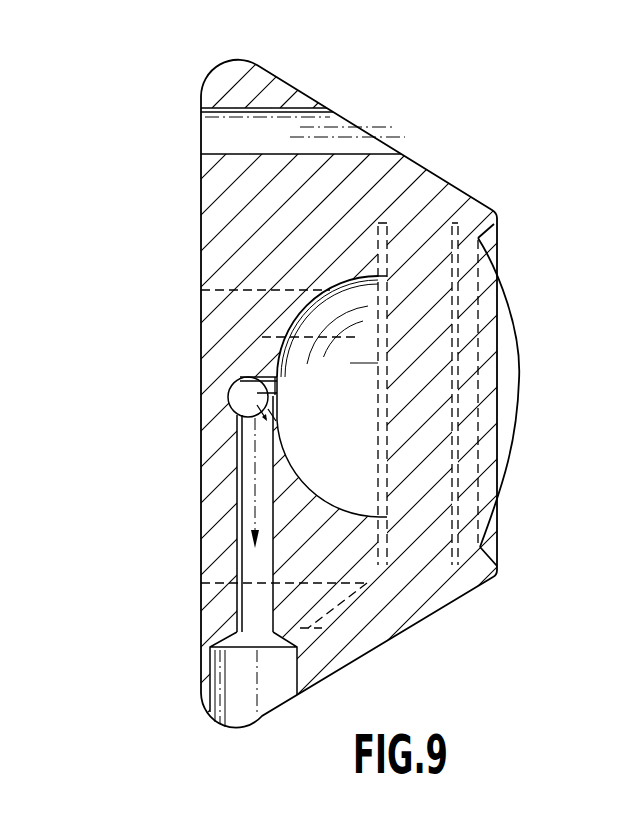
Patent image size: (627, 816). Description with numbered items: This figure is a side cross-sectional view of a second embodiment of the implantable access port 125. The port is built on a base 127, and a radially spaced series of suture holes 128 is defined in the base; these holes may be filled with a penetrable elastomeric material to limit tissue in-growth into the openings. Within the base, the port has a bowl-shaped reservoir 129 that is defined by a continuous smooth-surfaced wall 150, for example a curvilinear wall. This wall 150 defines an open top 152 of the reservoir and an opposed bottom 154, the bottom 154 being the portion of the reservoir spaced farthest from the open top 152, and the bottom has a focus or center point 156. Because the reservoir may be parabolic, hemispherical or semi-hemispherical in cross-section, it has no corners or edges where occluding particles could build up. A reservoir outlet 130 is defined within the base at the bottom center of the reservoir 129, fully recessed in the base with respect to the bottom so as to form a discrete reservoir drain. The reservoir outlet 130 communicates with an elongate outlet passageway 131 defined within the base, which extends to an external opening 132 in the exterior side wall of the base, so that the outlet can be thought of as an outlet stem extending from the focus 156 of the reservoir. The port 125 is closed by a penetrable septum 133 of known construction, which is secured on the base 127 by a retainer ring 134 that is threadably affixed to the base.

The implantable access port 125 is at (150, 99).
The base 127 is at (200, 204).
The suture holes 128 is at (290, 143).
The bowl-shaped reservoir 129 is at (358, 467).
The reservoir outlet 130 is at (232, 388).
The outlet passageway 131 is at (250, 462).
The external opening 132 is at (274, 687).
The penetrable septum 133 is at (518, 420).
The retainer ring 134 is at (497, 573).
The continuous smooth-surfaced wall 150 is at (338, 277).
The open top 152 is at (374, 282).
The bottom 154 is at (252, 400).
The focus or center point 156 is at (252, 405).